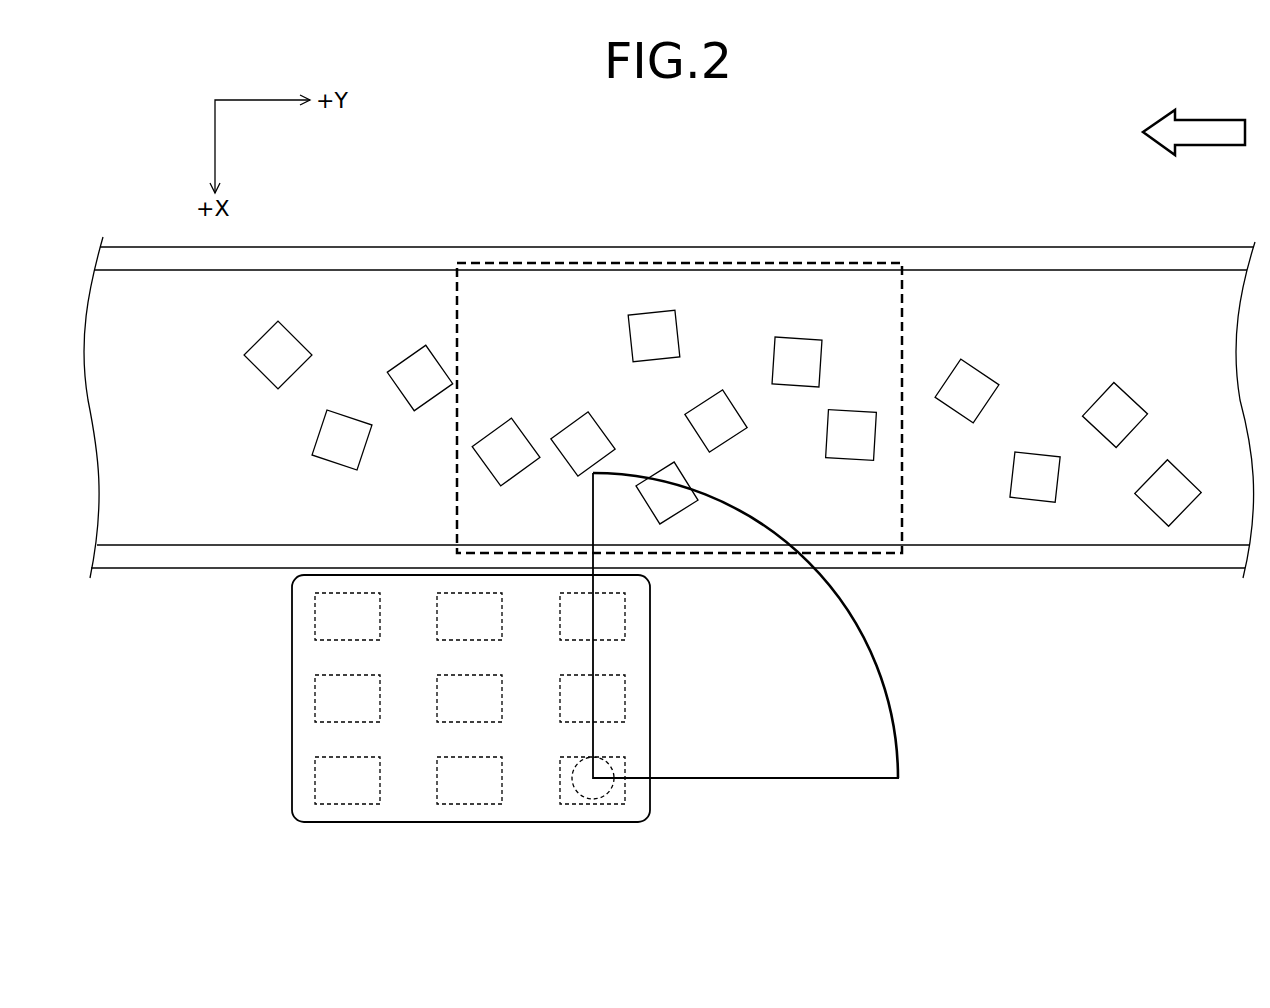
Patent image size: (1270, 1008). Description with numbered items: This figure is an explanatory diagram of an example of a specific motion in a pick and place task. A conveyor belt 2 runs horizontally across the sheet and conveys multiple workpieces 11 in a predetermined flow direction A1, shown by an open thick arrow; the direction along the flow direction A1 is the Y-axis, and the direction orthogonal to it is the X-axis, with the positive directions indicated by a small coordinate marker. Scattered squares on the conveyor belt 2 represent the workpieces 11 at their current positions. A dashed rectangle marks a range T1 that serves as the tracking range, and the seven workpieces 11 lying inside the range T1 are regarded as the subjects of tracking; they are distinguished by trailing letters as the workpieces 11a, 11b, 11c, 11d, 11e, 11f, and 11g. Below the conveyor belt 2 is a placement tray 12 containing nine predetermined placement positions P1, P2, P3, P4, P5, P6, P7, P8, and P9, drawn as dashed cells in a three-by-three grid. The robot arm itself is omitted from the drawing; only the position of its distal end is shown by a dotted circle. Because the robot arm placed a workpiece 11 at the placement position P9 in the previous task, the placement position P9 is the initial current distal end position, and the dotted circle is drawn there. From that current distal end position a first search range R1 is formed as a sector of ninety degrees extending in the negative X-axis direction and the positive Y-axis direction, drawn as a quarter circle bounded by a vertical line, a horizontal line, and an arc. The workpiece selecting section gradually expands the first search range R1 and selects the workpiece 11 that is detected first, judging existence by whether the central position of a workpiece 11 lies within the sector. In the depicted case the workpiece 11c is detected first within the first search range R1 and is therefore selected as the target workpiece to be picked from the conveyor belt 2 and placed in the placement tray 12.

The conveyor belt 2 is at (928, 256).
The workpiece 11 is at (258, 334).
The workpiece 11a is at (494, 429).
The workpiece 11b is at (602, 422).
The workpiece 11c is at (690, 477).
The workpiece 11d is at (698, 397).
The workpiece 11e is at (627, 337).
The workpiece 11f is at (797, 338).
The workpiece 11g is at (848, 412).
The placement tray 12 is at (471, 731).
The range T1 is at (678, 262).
The first search range R1 is at (897, 718).
The flow direction A1 is at (1203, 118).
The placement position P1 is at (347, 616).
The placement position P2 is at (469, 616).
The placement position P3 is at (592, 616).
The placement position P4 is at (347, 698).
The placement position P5 is at (469, 698).
The placement position P6 is at (592, 698).
The placement position P7 is at (347, 780).
The placement position P8 is at (469, 780).
The placement position P9 is at (592, 780).